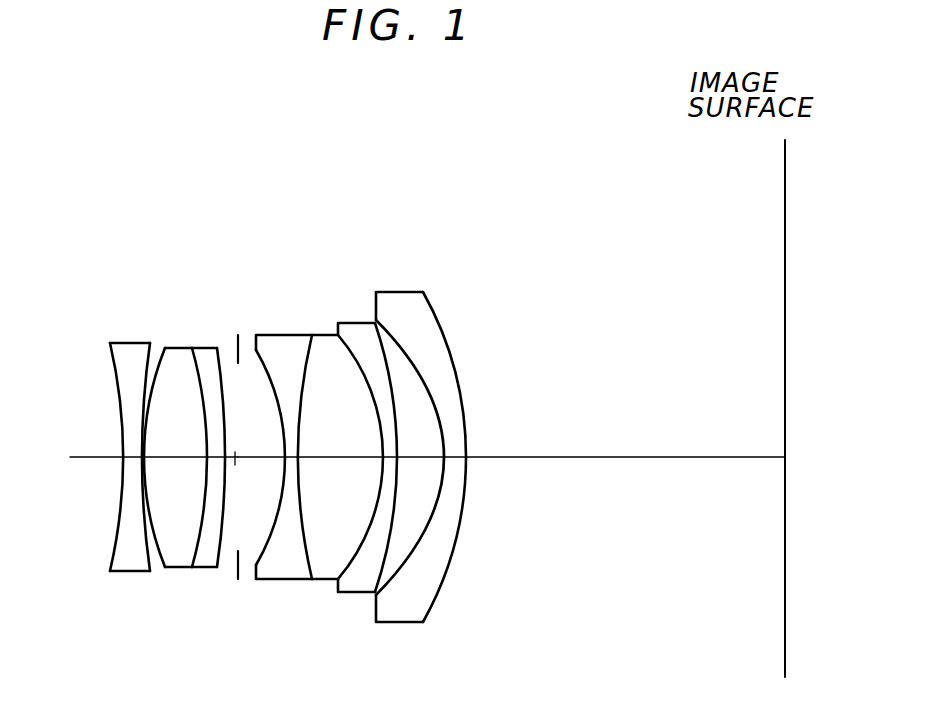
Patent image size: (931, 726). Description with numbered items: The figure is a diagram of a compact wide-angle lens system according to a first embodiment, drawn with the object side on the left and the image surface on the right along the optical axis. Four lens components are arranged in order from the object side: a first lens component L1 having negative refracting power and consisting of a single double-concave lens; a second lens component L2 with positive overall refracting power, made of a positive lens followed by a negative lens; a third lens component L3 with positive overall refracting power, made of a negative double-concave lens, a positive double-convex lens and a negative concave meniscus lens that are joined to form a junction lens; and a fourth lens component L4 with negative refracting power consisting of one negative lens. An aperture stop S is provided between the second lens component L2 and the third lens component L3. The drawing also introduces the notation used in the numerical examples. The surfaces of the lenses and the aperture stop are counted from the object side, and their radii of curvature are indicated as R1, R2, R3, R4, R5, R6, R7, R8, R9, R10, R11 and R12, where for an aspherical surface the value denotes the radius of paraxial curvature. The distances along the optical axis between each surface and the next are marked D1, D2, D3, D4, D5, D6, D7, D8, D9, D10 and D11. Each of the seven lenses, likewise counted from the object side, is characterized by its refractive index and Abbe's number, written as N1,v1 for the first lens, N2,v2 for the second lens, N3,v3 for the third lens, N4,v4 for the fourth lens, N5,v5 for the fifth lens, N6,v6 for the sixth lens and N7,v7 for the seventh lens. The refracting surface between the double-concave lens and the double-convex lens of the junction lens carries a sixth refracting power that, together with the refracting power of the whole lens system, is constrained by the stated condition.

The first lens component L1 is at (145, 170).
The second lens component L2 is at (217, 170).
The third lens component L3 is at (365, 170).
The fourth lens component L4 is at (437, 171).
The aperture stop S is at (238, 335).
The radius of curvature of the first surface R1 is at (108, 350).
The radius of curvature of the second surface R2 is at (152, 354).
The radius of curvature of the third surface R3 is at (172, 348).
The radius of curvature of the fourth surface R4 is at (193, 348).
The radius of curvature of the fifth surface R5 is at (219, 348).
The radius of curvature of the sixth surface R6 is at (242, 362).
The radius of curvature of the seventh surface R7 is at (257, 352).
The radius of curvature of the eighth surface R8 is at (304, 358).
The radius of curvature of the ninth surface R9 is at (340, 333).
The radius of curvature of the tenth surface R10 is at (393, 378).
The radius of curvature of the eleventh surface R11 is at (392, 340).
The radius of curvature of the twelfth surface R12 is at (440, 318).
The distance between the first and second surfaces D1 is at (121, 457).
The distance between the second and third surfaces D2 is at (143, 457).
The distance between the third and fourth surfaces D3 is at (174, 462).
The distance between the fourth and fifth surfaces D4 is at (214, 455).
The distance between the fifth and sixth surfaces D5 is at (232, 456).
The distance between the sixth and seventh surfaces D6 is at (256, 461).
The distance between the seventh and eighth surfaces D7 is at (292, 455).
The distance between the eighth and ninth surfaces D8 is at (336, 461).
The distance between the ninth and tenth surfaces D9 is at (389, 455).
The distance between the tenth and eleventh surfaces D10 is at (418, 461).
The distance between the eleventh and twelfth surfaces D11 is at (455, 455).
The refractive index and Abbe's number of the first lens N1,v1 is at (123, 571).
The refractive index and Abbe's number of the second lens N2,v2 is at (176, 567).
The refractive index and Abbe's number of the third lens N3,v3 is at (198, 567).
The refractive index and Abbe's number of the fourth lens N4,v4 is at (273, 579).
The refractive index and Abbe's number of the fifth lens N5,v5 is at (320, 576).
The refractive index and Abbe's number of the sixth lens N6,v6 is at (355, 585).
The refractive index and Abbe's number of the seventh lens N7,v7 is at (406, 614).